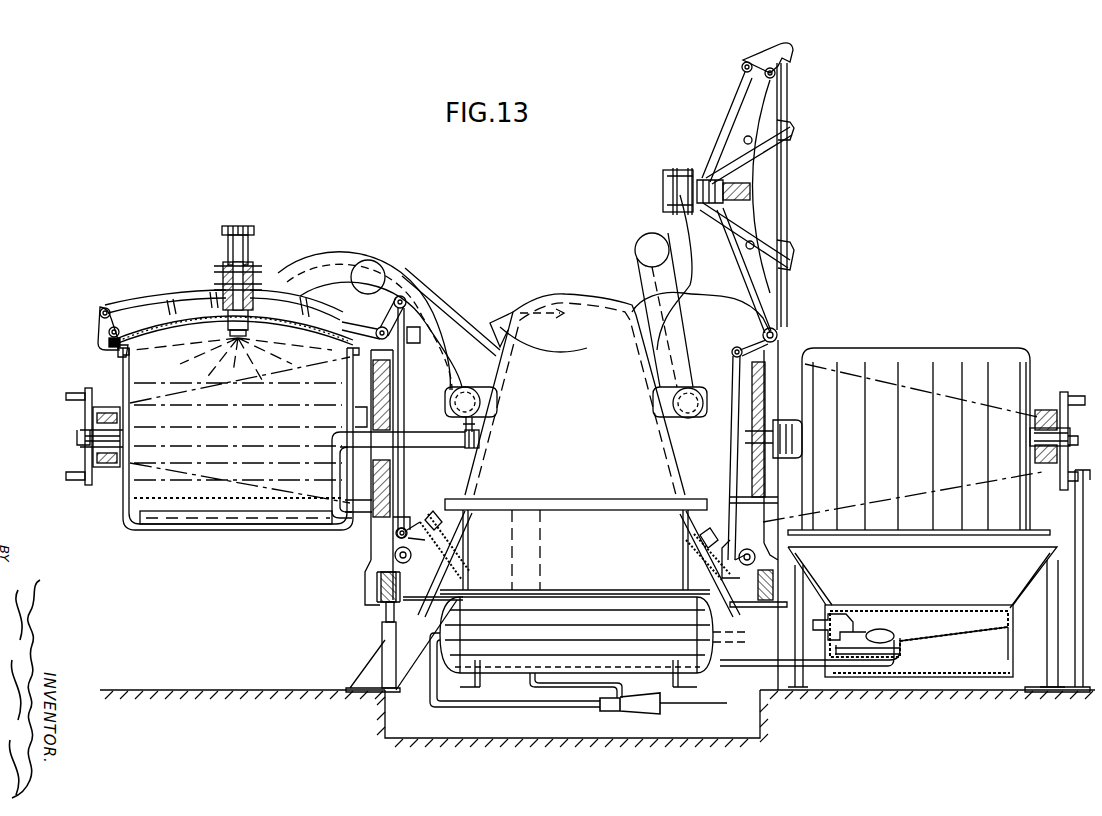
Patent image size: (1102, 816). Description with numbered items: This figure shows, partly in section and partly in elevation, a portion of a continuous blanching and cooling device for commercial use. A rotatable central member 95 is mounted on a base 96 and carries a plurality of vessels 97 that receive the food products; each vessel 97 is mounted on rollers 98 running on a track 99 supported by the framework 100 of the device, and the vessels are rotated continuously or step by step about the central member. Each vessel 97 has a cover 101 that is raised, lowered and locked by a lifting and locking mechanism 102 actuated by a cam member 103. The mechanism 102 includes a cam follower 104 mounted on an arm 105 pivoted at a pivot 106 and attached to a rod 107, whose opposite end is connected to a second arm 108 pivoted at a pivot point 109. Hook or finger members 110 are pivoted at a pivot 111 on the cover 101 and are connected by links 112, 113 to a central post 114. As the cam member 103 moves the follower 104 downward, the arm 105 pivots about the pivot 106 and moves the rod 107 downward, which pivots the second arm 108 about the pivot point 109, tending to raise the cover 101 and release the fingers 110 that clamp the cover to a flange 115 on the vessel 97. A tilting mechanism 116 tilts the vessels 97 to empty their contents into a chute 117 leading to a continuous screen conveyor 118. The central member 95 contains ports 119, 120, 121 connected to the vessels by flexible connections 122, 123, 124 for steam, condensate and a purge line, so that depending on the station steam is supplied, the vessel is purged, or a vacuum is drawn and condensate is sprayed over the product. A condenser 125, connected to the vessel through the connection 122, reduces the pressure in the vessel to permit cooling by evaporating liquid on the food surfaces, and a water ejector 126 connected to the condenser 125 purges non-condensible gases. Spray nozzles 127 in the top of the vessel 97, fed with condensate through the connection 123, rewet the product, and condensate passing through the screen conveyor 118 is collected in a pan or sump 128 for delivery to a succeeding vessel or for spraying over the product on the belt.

The rotatable central member 95 is at (575, 394).
The base 96 is at (575, 546).
The vessel 97 is at (128, 503).
The roller 98 is at (378, 590).
The track 99 is at (385, 616).
The framework 100 is at (385, 644).
The cover 101 is at (142, 330).
The lifting and locking mechanism 102 is at (282, 270).
The cam member 103 is at (720, 552).
The cam follower 104 is at (690, 570).
The arm 105 is at (418, 545).
The pivot 106 is at (430, 590).
The rod 107 is at (396, 485).
The second arm 108 is at (401, 296).
The pivot point 109 is at (407, 330).
The hook or finger member 110 is at (104, 338).
The pivot 111 is at (100, 312).
The link 112 is at (97, 328).
The link 113 is at (157, 300).
The central post 114 is at (249, 244).
The flange 115 is at (112, 353).
The tilting mechanism 116 is at (80, 434).
The chute 117 is at (802, 572).
The continuous screen conveyor 118 is at (888, 608).
The port 119 is at (468, 421).
The port 120 is at (492, 321).
The port 121 is at (466, 448).
The flexible connection 122 is at (455, 384).
The flexible connection 123 is at (498, 342).
The flexible connection 124 is at (360, 408).
The condenser 125 is at (690, 660).
The water ejector 126 is at (650, 708).
The spray nozzle 127 is at (240, 340).
The pan or sump 128 is at (895, 648).